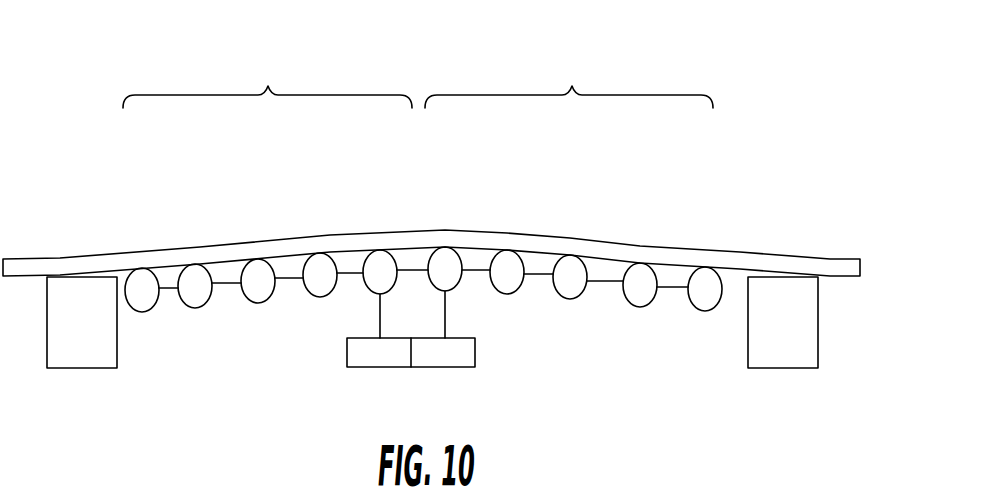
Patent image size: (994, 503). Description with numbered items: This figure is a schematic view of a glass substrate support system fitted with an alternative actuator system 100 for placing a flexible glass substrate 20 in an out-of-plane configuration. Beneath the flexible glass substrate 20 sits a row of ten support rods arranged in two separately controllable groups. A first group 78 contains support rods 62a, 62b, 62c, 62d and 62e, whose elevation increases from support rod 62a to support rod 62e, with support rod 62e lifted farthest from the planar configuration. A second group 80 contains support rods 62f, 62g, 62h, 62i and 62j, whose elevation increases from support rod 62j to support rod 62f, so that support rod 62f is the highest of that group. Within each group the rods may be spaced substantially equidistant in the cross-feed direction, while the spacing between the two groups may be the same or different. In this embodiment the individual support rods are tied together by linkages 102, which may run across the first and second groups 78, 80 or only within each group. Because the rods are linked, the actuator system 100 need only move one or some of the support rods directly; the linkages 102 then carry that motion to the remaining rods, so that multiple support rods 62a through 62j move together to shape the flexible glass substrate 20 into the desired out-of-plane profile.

The flexible glass substrate 20 is at (757, 262).
The first group 78 is at (267, 78).
The second group 80 is at (569, 78).
The support rod 62a is at (142, 290).
The support rod 62b is at (195, 286).
The support rod 62c is at (258, 281).
The support rod 62d is at (320, 275).
The support rod 62e is at (380, 272).
The support rod 62f is at (445, 269).
The support rod 62g is at (507, 272).
The support rod 62h is at (570, 277).
The support rod 62i is at (640, 285).
The support rod 62j is at (705, 289).
The actuator system 100 is at (507, 352).
The linkages 102 is at (227, 283).